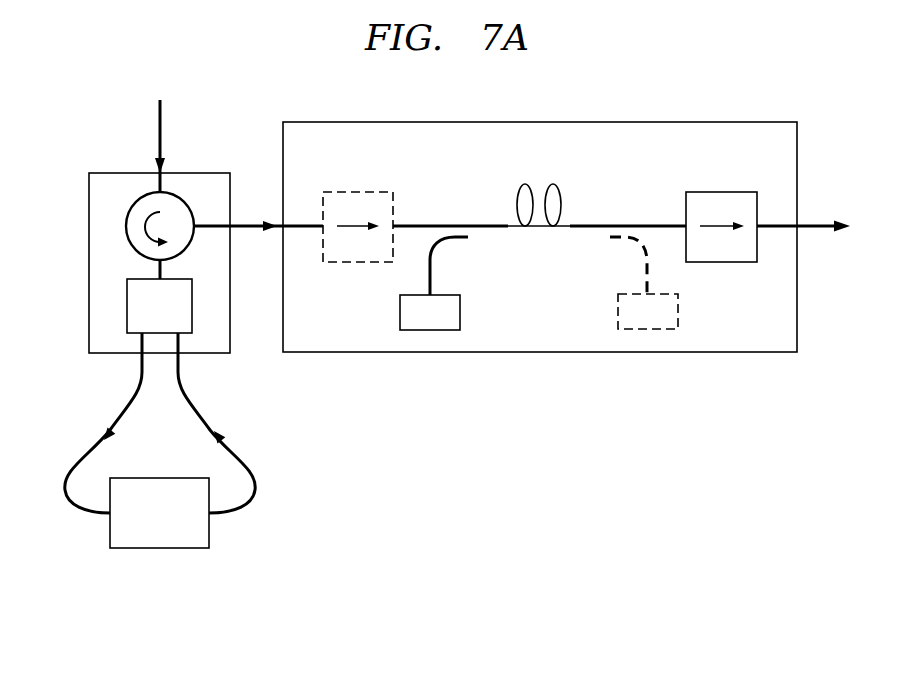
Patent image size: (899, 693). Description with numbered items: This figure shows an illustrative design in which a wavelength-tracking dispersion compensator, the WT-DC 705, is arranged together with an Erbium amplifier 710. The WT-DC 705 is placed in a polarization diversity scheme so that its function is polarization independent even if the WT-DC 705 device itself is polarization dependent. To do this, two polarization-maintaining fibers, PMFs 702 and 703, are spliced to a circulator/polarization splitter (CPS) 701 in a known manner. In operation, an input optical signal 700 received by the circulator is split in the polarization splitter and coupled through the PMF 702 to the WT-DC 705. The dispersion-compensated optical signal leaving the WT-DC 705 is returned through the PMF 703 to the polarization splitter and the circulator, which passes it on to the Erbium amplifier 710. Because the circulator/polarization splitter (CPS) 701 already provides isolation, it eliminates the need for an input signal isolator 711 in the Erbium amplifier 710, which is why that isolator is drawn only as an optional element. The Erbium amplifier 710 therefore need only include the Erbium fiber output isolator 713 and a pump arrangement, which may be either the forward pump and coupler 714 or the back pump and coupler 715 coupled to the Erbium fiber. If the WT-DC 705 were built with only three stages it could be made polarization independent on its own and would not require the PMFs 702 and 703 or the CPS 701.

The input optical signal 700 is at (160, 131).
The circulator/polarization splitter 701 is at (89, 265).
The polarization-maintaining fiber 702 is at (128, 408).
The polarization-maintaining fiber 703 is at (188, 408).
The WT-DC 705 is at (160, 548).
The Erbium amplifier 710 is at (798, 170).
The input signal isolator 711 is at (357, 192).
The Erbium fiber output isolator 713 is at (722, 192).
The forward pump and coupler 714 is at (460, 312).
The back pump and coupler 715 is at (678, 303).